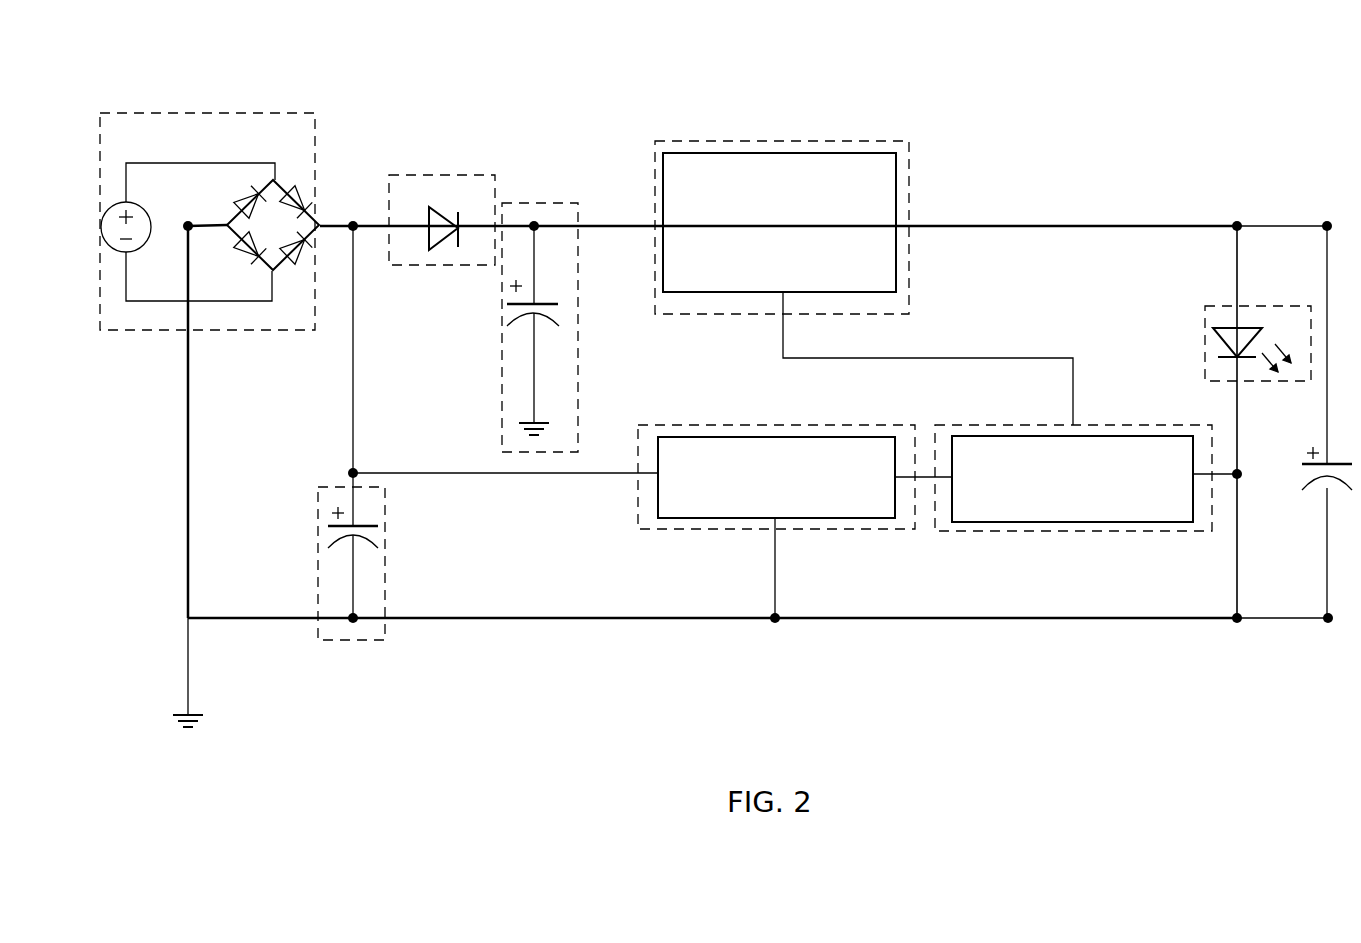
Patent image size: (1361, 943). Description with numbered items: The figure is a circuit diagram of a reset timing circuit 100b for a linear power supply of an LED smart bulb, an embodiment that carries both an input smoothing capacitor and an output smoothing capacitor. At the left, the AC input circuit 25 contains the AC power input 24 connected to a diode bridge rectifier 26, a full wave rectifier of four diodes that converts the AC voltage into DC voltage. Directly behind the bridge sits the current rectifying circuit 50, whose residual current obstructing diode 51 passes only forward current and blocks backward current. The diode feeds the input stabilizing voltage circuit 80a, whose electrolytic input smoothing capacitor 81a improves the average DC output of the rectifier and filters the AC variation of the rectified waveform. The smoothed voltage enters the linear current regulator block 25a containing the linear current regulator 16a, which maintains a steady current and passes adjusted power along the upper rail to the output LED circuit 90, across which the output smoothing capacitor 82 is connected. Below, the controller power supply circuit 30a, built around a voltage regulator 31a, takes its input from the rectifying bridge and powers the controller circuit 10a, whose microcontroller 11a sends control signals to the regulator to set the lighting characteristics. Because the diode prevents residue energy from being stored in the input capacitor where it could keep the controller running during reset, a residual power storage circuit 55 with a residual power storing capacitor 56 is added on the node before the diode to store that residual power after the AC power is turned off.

The reset timing circuit 100b is at (1035, 62).
The AC input circuit 25 is at (178, 112).
The AC power input 24 is at (110, 207).
The diode bridge rectifier 26 is at (285, 236).
The current rectifying circuit 50 is at (408, 174).
The diode 51 is at (445, 207).
The input stabilizing voltage circuit 80a is at (541, 203).
The input smoothing capacitor 81a is at (558, 304).
The linear current regulator block 25a is at (788, 138).
The linear current regulator 16a is at (801, 246).
The controller power supply circuit 30a is at (715, 531).
The voltage regulator 31a is at (786, 494).
The controller circuit 10a is at (1080, 531).
The microcontroller 11a is at (1089, 516).
The output LED circuit 90 is at (1218, 305).
The output smoothing capacitor 82 is at (1320, 487).
The residual power storage circuit 55 is at (352, 640).
The residual power storing capacitor 56 is at (378, 533).